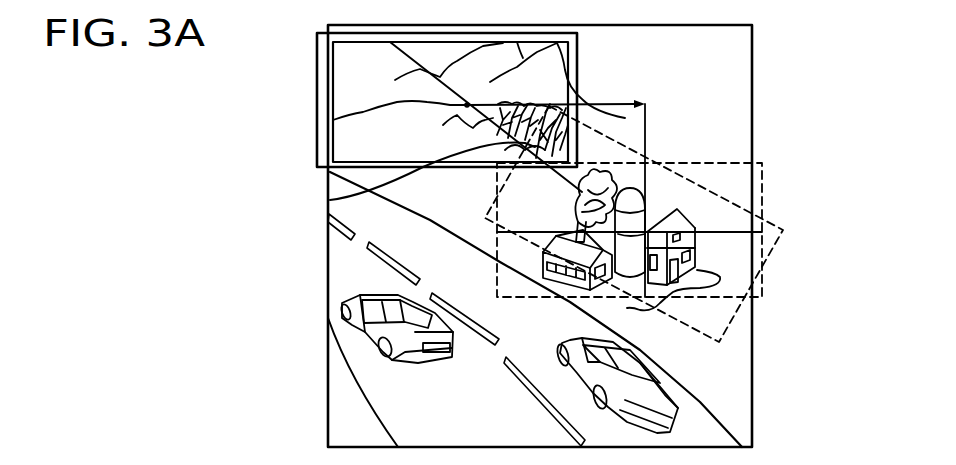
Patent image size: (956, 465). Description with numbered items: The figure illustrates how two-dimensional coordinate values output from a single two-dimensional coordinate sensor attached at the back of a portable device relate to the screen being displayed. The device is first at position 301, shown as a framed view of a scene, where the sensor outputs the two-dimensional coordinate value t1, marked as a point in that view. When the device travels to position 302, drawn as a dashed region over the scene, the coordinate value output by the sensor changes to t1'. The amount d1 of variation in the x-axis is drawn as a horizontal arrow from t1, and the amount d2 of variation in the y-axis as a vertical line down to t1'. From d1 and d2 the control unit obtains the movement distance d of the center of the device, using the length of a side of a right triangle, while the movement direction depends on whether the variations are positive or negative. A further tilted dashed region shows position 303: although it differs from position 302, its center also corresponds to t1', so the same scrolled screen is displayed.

The position 301 is at (340, 82).
The position 302 is at (763, 174).
The position 303 is at (728, 322).
The movement distance d is at (330, 200).
The amount of variation in the x-axis d1 is at (609, 103).
The amount of variation in the y-axis d2 is at (647, 133).
The 2-dimensional coordinate value t1 is at (370, 115).
The 2-dimensional coordinate value t1' is at (629, 169).